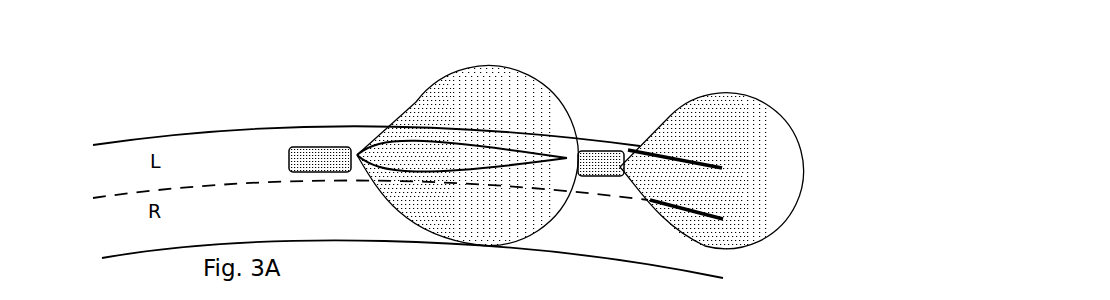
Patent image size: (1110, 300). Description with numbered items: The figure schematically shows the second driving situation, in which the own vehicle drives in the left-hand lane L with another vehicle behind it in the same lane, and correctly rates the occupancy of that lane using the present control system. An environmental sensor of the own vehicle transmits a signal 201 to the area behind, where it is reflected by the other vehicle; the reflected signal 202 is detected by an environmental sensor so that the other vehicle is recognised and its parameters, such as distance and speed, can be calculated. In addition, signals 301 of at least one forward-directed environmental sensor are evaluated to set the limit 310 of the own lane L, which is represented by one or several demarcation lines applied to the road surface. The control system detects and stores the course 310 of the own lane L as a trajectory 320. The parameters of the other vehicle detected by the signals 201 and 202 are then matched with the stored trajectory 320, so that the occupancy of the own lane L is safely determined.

The trajectory 320 is at (408, 166).
The signal 201 is at (428, 139).
The reflected signal 202 is at (468, 169).
The limit of the own lane 310 is at (712, 152).
The signals of forward-directed environmental sensor 301 is at (634, 224).